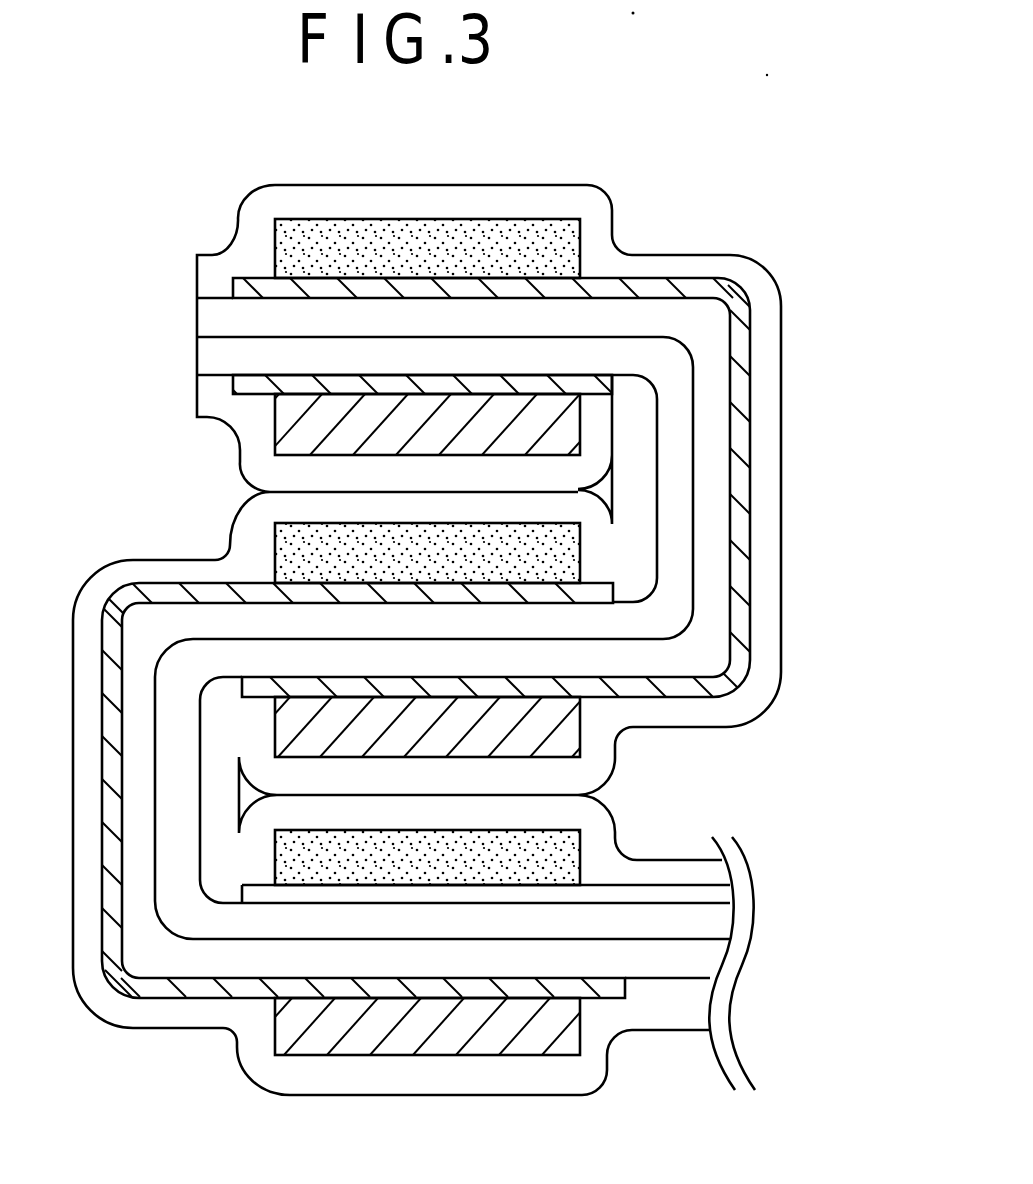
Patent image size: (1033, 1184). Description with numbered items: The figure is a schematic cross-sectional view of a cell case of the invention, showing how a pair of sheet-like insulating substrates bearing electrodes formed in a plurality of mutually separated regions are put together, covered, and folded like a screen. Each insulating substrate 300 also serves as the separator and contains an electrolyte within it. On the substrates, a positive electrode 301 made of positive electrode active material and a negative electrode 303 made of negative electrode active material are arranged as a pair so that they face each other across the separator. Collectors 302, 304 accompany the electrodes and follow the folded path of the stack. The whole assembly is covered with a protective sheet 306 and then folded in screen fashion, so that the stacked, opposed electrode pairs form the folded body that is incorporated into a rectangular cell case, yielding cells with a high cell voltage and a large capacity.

The insulating substrate 300 is at (682, 553).
The positive electrode 301 is at (564, 222).
The collector 302 is at (717, 288).
The negative electrode 303 is at (529, 1040).
The collector 304 is at (167, 990).
The protective sheet 306 is at (768, 413).